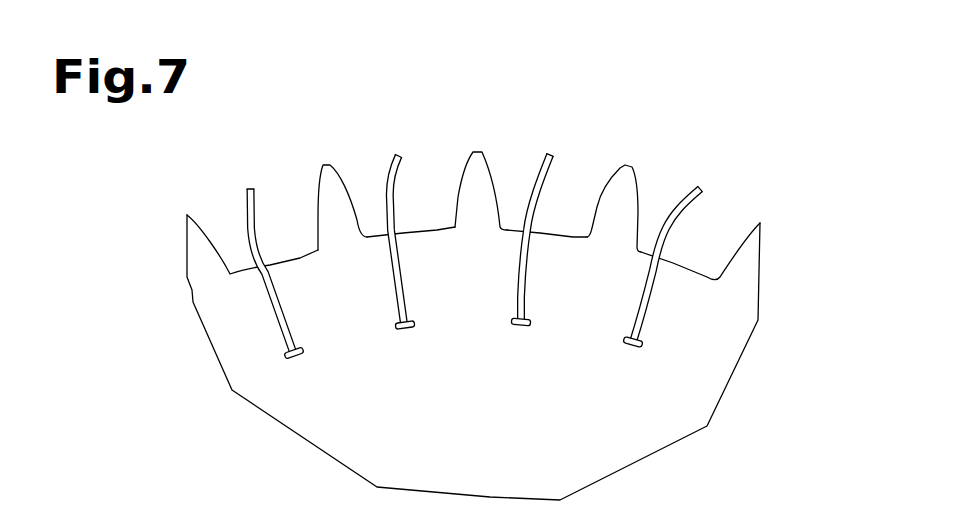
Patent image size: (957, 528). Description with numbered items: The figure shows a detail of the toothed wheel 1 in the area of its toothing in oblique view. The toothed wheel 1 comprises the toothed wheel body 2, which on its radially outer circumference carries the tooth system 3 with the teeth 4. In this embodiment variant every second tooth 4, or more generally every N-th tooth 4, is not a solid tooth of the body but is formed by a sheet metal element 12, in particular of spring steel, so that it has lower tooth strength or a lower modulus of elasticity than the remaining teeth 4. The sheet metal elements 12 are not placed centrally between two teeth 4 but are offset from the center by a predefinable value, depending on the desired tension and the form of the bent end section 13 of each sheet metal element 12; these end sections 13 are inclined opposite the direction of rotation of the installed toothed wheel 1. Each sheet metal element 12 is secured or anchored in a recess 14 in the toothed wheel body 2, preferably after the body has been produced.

The toothed wheel 1 is at (540, 273).
The toothed wheel body 2 is at (655, 424).
The tooth system 3 is at (473, 166).
The tooth 4 is at (345, 156).
The sheet metal element 12 is at (400, 146).
The bent end section 13 is at (728, 194).
The recess 14 is at (650, 340).